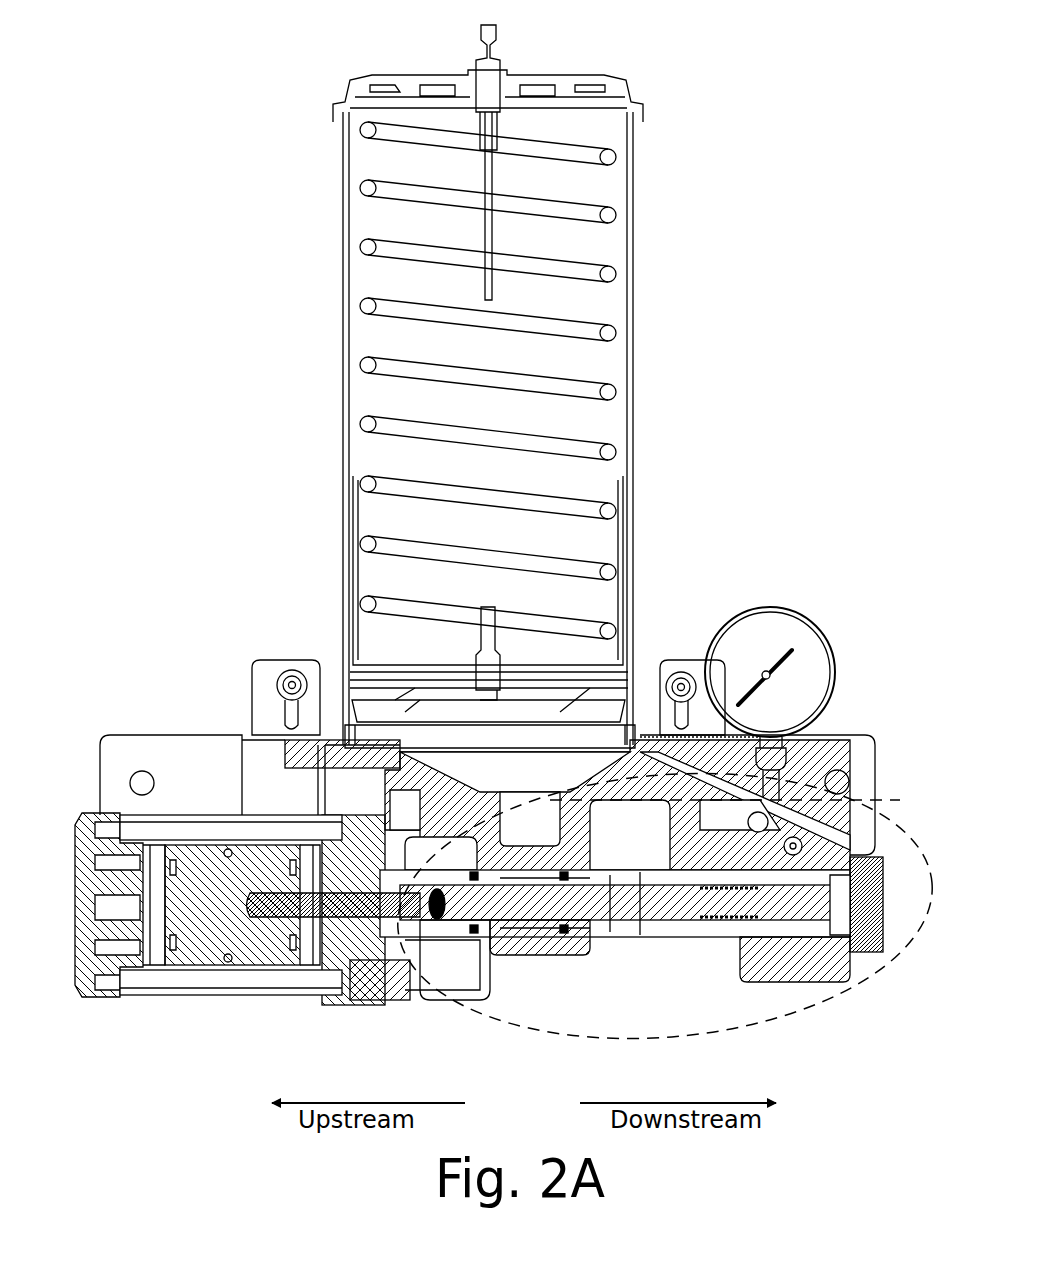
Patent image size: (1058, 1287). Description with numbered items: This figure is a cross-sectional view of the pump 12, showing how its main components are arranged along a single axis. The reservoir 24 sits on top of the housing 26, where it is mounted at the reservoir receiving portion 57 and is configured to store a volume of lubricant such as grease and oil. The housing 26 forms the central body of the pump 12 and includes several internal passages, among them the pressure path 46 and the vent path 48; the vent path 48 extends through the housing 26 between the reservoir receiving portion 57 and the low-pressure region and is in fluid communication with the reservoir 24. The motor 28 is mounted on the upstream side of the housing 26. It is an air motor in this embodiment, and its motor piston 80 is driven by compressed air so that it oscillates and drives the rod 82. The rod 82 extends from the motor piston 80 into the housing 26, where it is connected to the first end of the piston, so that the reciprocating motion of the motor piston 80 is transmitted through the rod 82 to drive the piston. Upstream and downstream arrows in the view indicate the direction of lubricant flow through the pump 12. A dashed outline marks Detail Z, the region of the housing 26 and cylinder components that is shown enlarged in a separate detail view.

The pump 12 is at (170, 455).
The reservoir 24 is at (633, 300).
The housing 26 is at (541, 968).
The motor 28 is at (70, 816).
The pressure path 46 is at (850, 750).
The vent path 48 is at (650, 780).
The reservoir receiving portion 57 is at (430, 785).
The motor piston 80 is at (205, 880).
The rod 82 is at (307, 905).
The Detail Z is at (733, 1032).